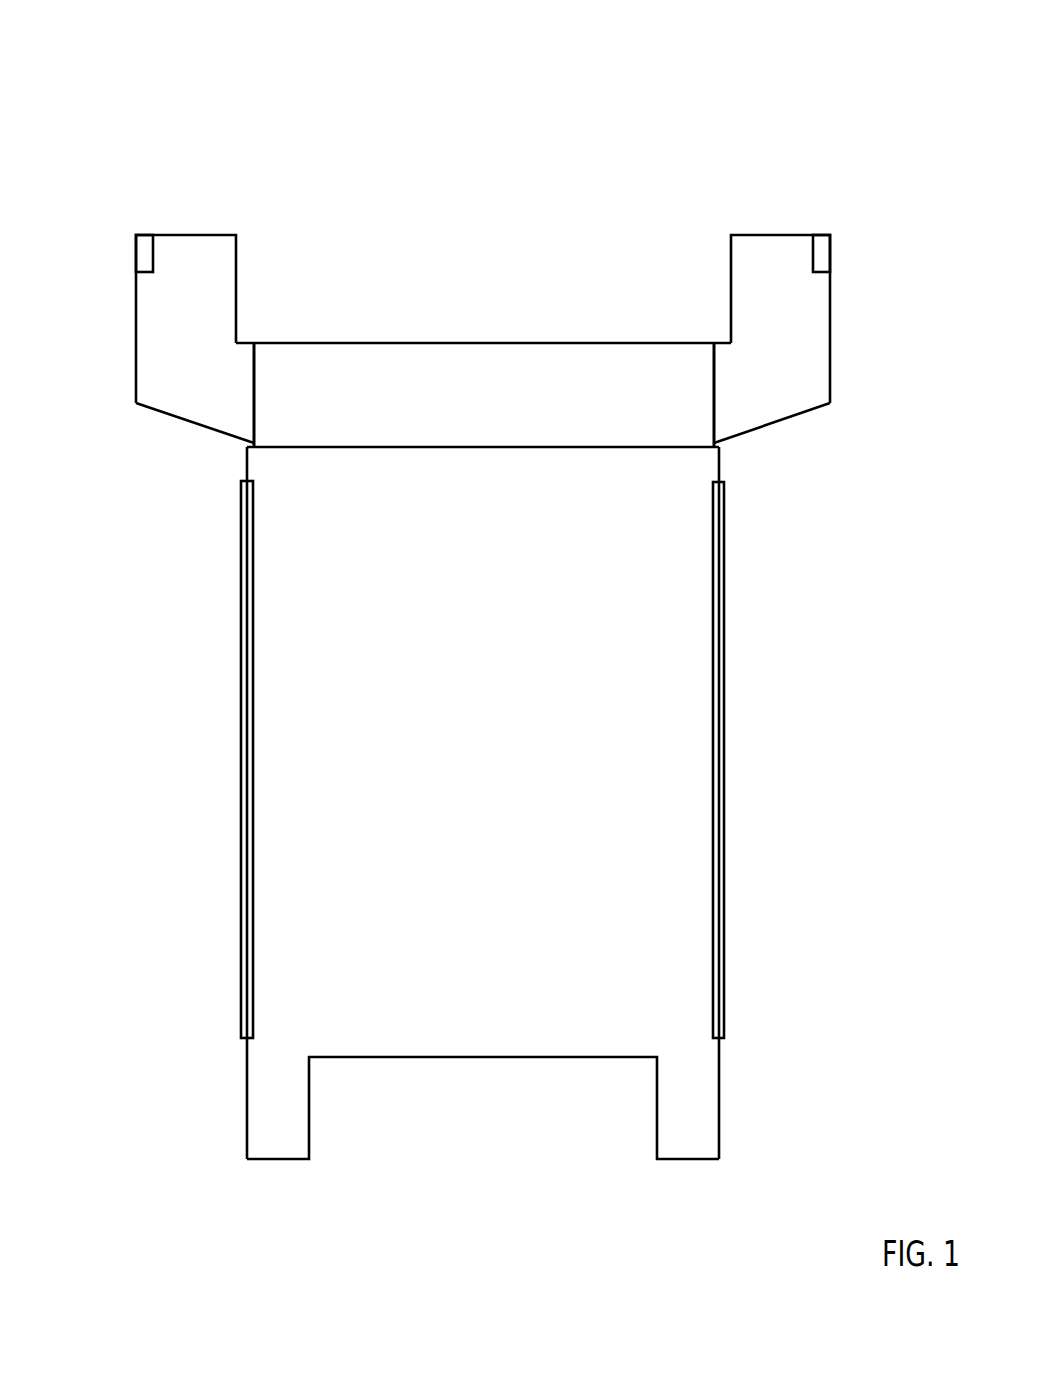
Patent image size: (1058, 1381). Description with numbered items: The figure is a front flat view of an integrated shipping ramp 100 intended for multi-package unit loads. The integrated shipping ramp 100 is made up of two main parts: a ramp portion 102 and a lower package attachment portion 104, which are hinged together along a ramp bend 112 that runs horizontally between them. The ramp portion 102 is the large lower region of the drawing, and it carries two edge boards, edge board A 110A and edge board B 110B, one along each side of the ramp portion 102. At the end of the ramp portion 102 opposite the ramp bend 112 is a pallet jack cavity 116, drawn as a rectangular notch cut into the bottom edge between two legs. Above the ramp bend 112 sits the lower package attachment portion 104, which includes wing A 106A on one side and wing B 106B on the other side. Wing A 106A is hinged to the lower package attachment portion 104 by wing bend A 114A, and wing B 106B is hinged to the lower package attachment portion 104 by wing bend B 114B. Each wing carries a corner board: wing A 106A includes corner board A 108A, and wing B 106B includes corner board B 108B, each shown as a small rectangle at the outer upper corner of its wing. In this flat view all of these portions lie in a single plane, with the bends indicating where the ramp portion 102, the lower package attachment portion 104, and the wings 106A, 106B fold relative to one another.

The integrated shipping ramp 100 is at (485, 620).
The ramp portion 102 is at (483, 837).
The lower package attachment portion 104 is at (499, 434).
The wing A 106A is at (443, 218).
The wing B 106B is at (665, 238).
The corner board A 108A is at (292, 158).
The corner board B 108B is at (727, 176).
The edge board A 110A is at (168, 666).
The edge board B 110B is at (818, 760).
The ramp bend 112 is at (495, 536).
The wing bend A 114A is at (163, 496).
The wing bend B 114B is at (856, 496).
The pallet jack cavity 116 is at (647, 1226).